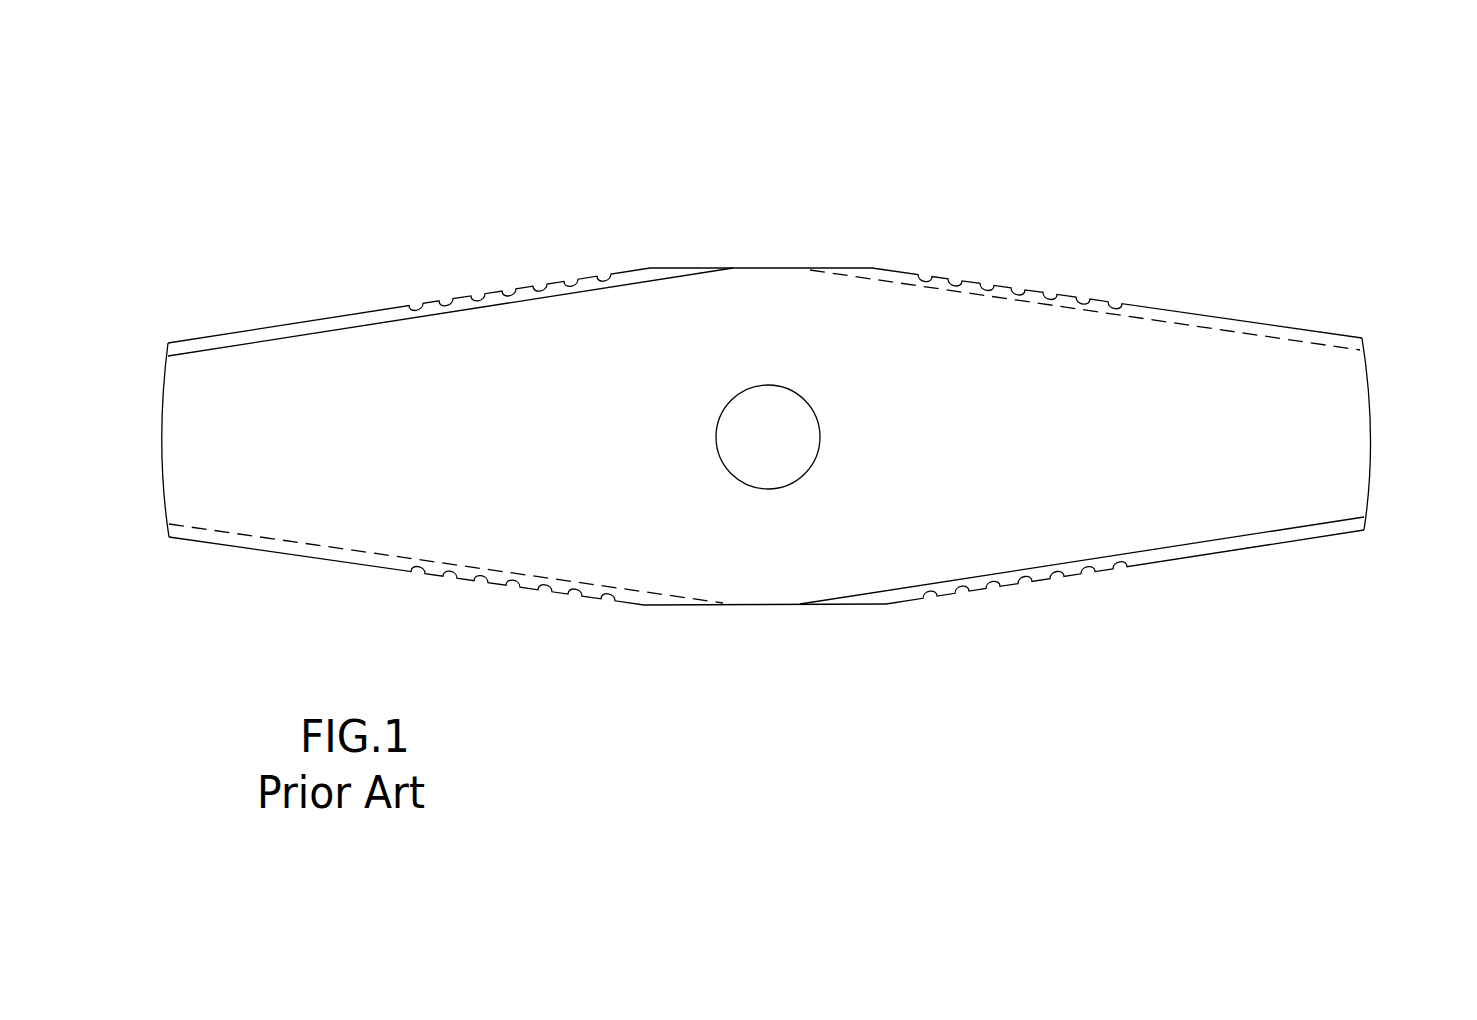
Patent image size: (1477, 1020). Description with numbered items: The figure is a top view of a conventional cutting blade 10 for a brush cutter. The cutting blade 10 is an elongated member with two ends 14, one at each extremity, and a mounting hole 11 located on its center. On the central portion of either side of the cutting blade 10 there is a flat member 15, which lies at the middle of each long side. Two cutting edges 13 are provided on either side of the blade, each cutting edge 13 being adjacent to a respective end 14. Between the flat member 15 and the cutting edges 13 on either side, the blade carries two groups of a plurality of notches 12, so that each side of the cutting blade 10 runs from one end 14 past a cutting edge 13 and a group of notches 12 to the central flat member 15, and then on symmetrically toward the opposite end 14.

The cutting blade 10 is at (1180, 407).
The mounting hole 11 is at (795, 425).
The notches 12 is at (988, 292).
The cutting edges 13 is at (1190, 553).
The ends 14 is at (162, 477).
The flat member 15 is at (765, 268).